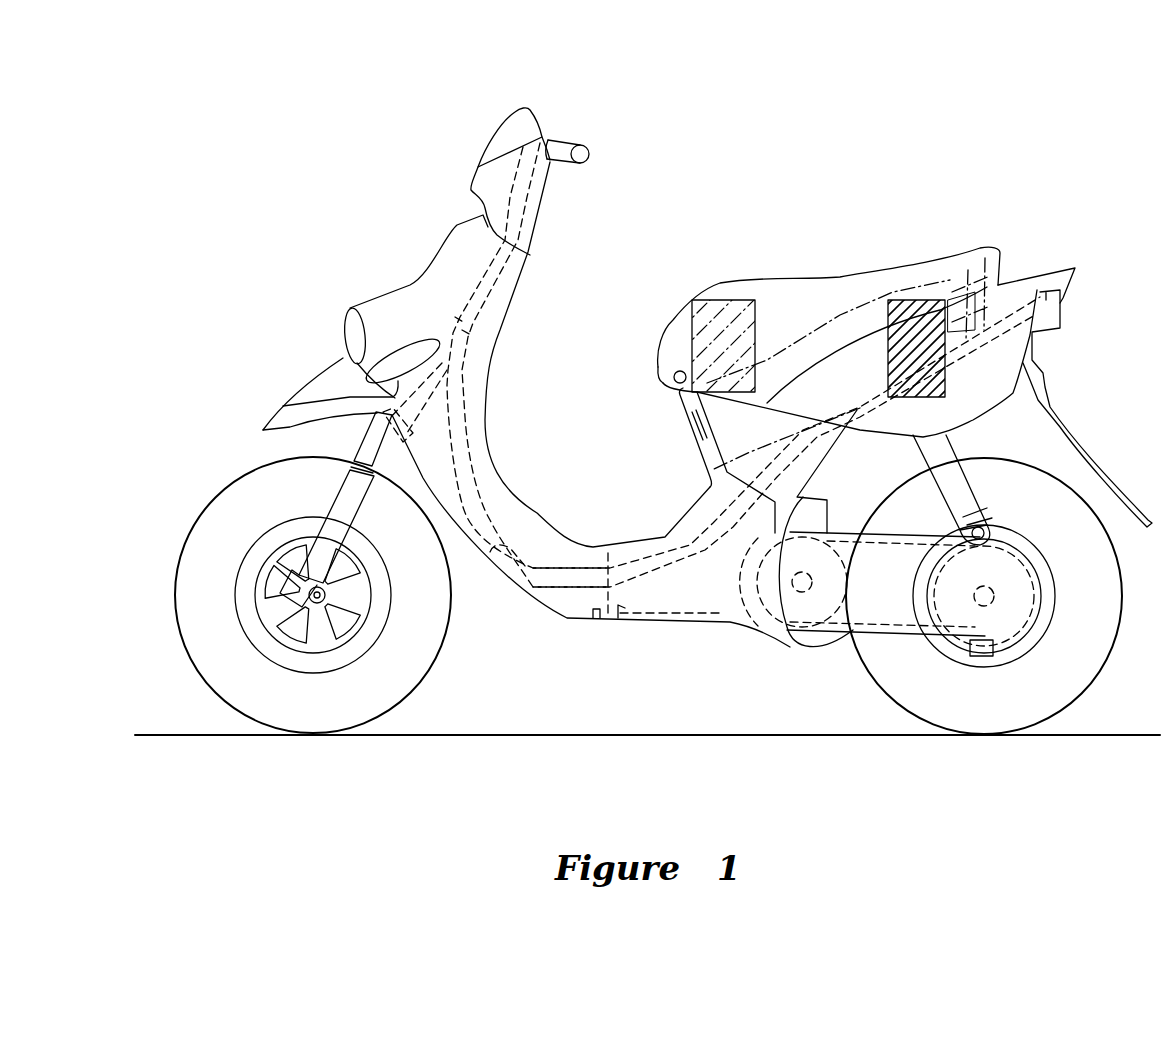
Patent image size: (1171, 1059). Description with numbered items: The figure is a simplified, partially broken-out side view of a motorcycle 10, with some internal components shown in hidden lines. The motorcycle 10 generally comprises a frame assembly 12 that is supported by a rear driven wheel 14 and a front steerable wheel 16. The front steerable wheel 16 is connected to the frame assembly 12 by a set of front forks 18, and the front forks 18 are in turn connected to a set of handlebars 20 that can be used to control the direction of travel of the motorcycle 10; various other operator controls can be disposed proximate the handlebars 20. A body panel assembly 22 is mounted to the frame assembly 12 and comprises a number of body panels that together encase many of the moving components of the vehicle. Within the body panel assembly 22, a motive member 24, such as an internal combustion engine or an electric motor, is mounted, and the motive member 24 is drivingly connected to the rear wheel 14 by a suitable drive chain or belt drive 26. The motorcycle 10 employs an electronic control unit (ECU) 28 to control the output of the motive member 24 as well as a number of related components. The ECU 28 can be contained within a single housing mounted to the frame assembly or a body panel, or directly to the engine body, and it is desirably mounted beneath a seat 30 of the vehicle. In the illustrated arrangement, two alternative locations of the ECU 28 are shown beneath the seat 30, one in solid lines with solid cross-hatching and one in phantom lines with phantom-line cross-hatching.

The motorcycle 10 is at (685, 152).
The frame assembly 12 is at (567, 577).
The rear driven wheel 14 is at (893, 673).
The front steerable wheel 16 is at (403, 678).
The front forks 18 is at (340, 503).
The handlebars 20 is at (572, 140).
The body panel assembly 22 is at (522, 527).
The motive member 24 is at (768, 588).
The drive chain or belt drive 26 is at (967, 513).
The electronic control unit (ECU) 28 is at (748, 300).
The seat 30 is at (851, 290).